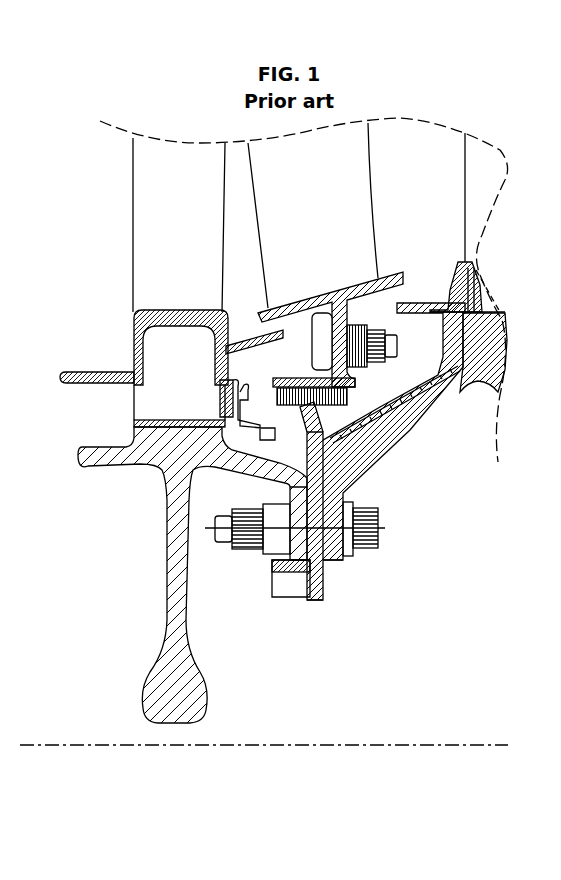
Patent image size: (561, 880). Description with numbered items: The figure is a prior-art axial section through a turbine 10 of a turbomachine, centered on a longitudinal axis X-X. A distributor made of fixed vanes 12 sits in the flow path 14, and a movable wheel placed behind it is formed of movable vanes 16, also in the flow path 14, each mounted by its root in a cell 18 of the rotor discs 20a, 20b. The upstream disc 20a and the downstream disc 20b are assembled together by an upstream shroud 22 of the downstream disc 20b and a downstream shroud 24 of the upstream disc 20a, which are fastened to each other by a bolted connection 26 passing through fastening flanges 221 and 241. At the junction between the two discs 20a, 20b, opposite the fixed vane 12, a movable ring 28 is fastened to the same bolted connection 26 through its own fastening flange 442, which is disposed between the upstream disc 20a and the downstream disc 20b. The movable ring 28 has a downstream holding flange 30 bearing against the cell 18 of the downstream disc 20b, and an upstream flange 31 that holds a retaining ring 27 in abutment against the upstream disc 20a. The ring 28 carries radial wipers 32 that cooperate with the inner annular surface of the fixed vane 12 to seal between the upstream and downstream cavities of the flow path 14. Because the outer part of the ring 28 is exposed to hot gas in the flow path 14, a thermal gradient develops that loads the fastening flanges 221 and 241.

The turbine 10 is at (96, 207).
The fixed vane 12 is at (322, 194).
The flow path 14 is at (252, 231).
The movable vane 16 is at (186, 194).
The cell 18 is at (186, 414).
The upstream disc 20a is at (126, 516).
The downstream disc 20b is at (473, 400).
The upstream shroud 22 is at (400, 425).
The downstream shroud 24 is at (262, 462).
The bolted connection 26 is at (366, 548).
The retaining ring 27 is at (241, 380).
The movable ring 28 is at (410, 367).
The downstream holding flange 30 is at (408, 393).
The upstream flange 31 is at (260, 430).
The radial wipers 32 is at (347, 417).
The fastening flange 221 is at (333, 560).
The fastening flange 241 is at (300, 566).
The fastening flange 442 is at (320, 557).
The longitudinal axis X is at (42, 745).